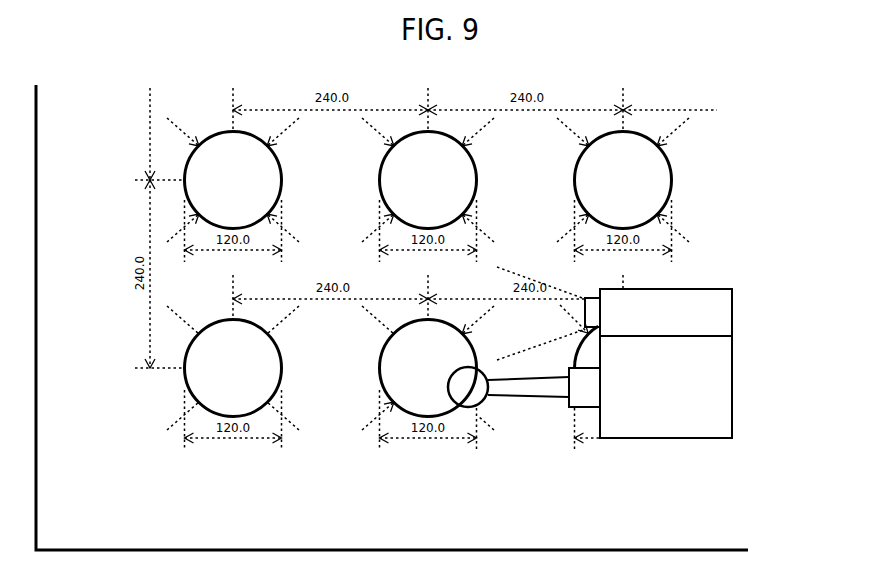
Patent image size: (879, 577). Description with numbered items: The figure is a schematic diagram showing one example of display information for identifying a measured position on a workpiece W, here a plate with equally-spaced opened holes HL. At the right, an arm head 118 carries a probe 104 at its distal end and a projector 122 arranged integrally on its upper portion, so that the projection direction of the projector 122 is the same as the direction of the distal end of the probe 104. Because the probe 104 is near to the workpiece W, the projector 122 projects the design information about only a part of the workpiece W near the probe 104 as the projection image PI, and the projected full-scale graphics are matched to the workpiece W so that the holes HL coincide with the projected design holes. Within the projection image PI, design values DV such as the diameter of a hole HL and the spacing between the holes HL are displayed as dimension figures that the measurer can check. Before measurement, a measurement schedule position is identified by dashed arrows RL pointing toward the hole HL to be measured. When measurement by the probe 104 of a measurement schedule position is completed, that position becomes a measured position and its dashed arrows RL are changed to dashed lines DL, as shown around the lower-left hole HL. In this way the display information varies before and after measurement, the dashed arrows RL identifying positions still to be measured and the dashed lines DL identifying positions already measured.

The design values DV is at (352, 98).
The projection image PI is at (565, 95).
The holes HL is at (665, 178).
The dashed arrows RL is at (678, 232).
The dashed lines DL is at (287, 420).
The probe 104 is at (553, 390).
The projector 122 is at (712, 315).
The arm head 118 is at (720, 392).
The workpiece W is at (700, 510).